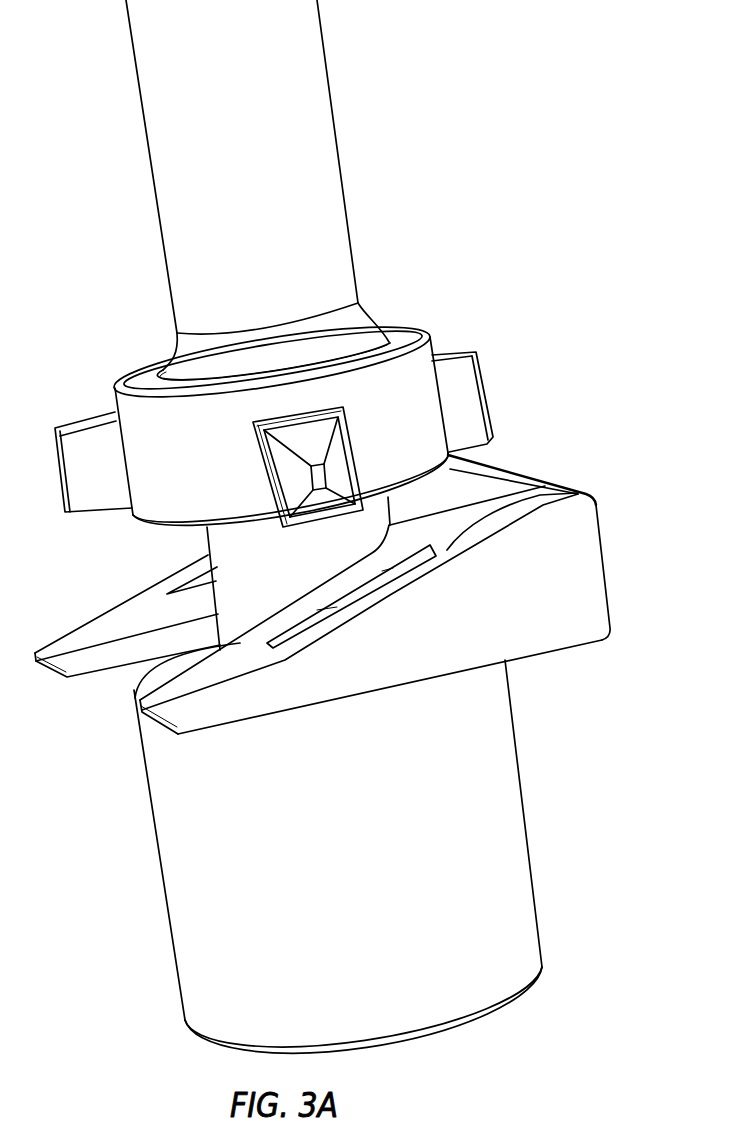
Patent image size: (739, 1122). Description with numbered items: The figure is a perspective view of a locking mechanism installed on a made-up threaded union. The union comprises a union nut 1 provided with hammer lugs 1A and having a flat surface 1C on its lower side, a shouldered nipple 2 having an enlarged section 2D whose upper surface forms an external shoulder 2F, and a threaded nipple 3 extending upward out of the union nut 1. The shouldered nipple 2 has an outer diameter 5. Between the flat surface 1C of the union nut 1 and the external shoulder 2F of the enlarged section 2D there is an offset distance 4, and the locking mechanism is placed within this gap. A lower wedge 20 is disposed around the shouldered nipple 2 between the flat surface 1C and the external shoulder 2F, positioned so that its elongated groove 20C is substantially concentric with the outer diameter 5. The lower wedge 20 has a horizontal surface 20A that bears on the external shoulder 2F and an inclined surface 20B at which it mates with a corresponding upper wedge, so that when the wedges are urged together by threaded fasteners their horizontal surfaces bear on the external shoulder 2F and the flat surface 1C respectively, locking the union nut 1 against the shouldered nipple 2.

The union nut 1 is at (433, 345).
The hammer lugs 1A is at (488, 390).
The flat surface 1C is at (148, 514).
The shouldered nipple 2 is at (321, 848).
The enlarged section 2D is at (163, 880).
The external shoulder 2F is at (160, 681).
The threaded nipple 3 is at (335, 118).
The offset distance 4 is at (152, 527).
The outer diameter 5 is at (387, 523).
The lower wedge 20 is at (352, 579).
The horizontal surface 20A is at (557, 653).
The inclined surface 20B is at (545, 498).
The elongated groove 20C is at (447, 548).